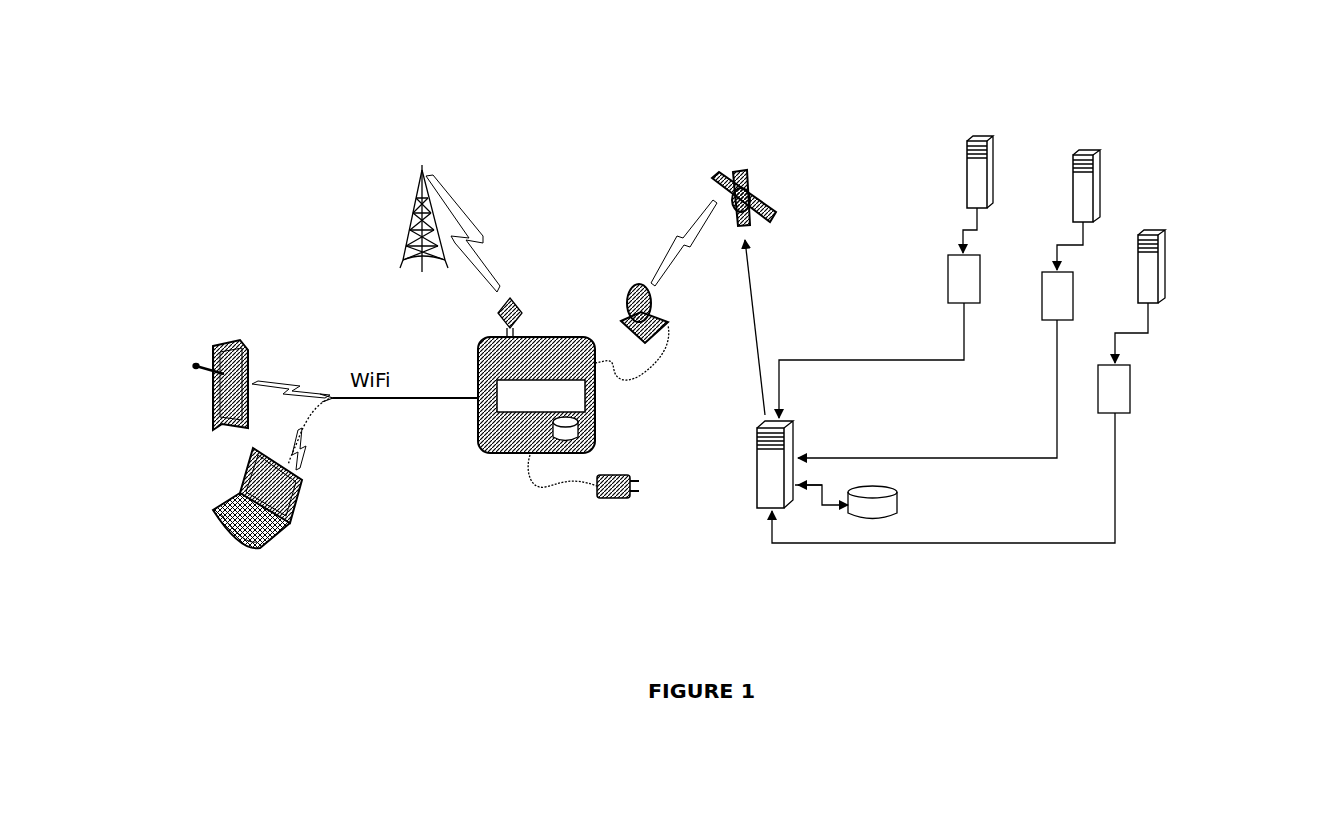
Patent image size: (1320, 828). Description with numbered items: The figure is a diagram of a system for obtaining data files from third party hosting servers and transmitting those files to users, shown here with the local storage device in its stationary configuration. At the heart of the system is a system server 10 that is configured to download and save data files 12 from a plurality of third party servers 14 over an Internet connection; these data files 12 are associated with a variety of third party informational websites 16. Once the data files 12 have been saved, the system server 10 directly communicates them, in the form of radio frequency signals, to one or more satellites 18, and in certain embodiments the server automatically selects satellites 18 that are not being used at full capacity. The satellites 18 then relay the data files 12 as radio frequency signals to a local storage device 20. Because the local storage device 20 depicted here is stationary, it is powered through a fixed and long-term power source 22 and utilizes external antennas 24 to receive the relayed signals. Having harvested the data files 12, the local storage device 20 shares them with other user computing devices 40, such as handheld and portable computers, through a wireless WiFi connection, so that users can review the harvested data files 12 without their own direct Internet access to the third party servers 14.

The system server 10 is at (745, 510).
The data files 12 is at (1209, 431).
The third party informational websites 16 is at (1143, 398).
The third party servers 14 is at (1178, 263).
The satellite 18 is at (718, 158).
The local storage device 20 is at (493, 465).
The fixed and long-term power source 22 is at (597, 503).
The external antenna 24 is at (520, 296).
The user computing device 40 is at (202, 505).